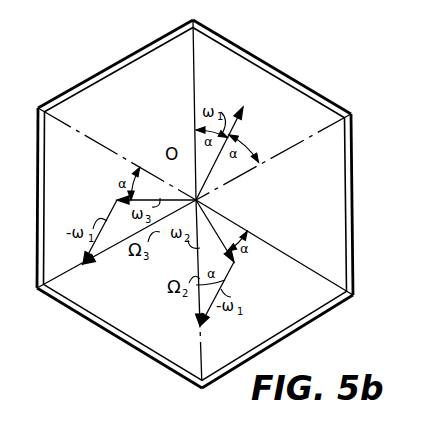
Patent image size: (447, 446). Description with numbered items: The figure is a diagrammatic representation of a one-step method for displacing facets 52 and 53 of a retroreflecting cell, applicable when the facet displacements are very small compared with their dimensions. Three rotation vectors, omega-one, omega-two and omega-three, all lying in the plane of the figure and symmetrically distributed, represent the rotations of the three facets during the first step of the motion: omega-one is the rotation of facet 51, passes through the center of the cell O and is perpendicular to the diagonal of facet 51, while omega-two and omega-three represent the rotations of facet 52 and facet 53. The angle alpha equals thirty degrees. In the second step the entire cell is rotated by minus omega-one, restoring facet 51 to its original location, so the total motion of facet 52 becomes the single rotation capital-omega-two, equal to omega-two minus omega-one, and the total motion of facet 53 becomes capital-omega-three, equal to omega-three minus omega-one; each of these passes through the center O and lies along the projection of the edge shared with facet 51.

The facet 51 is at (79, 179).
The facet 52 is at (300, 121).
The facet 53 is at (297, 311).